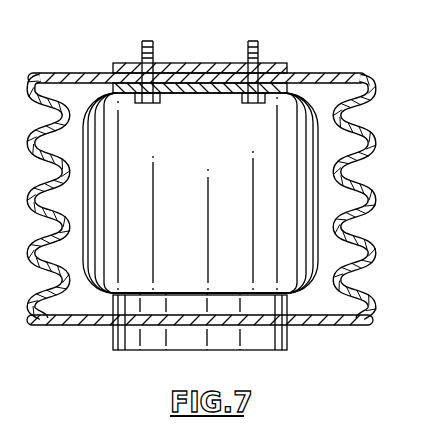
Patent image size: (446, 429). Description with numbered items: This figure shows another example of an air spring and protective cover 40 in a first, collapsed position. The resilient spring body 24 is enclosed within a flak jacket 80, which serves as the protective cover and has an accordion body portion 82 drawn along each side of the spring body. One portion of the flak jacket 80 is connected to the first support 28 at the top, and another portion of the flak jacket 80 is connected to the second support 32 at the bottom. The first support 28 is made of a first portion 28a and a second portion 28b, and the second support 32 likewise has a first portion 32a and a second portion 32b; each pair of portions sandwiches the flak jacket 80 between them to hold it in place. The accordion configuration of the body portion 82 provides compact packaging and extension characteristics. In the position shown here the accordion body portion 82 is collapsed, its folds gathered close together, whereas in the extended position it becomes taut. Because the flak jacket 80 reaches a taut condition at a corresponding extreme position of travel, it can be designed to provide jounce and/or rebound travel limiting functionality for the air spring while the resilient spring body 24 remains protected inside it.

The air spring assembly 40 is at (225, 199).
The first support 28 is at (197, 74).
The first portion of the first support 28a is at (234, 63).
The second portion of the first support 28b is at (227, 95).
The flak jacket 80 is at (78, 74).
The accordion body portion 82 is at (362, 212).
The resilient spring body 24 is at (297, 280).
The second support 32 is at (207, 322).
The first portion of the second support 32a is at (228, 342).
The second portion of the second support 32b is at (227, 310).